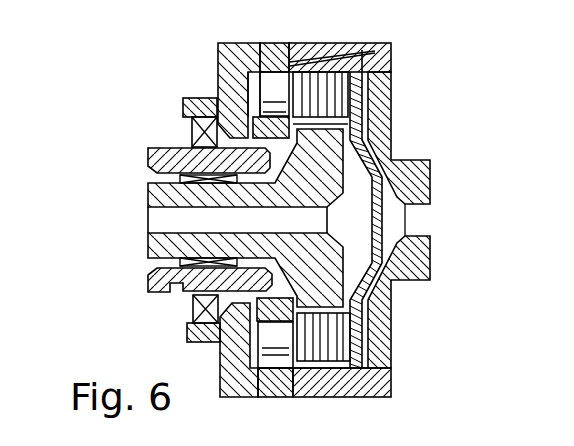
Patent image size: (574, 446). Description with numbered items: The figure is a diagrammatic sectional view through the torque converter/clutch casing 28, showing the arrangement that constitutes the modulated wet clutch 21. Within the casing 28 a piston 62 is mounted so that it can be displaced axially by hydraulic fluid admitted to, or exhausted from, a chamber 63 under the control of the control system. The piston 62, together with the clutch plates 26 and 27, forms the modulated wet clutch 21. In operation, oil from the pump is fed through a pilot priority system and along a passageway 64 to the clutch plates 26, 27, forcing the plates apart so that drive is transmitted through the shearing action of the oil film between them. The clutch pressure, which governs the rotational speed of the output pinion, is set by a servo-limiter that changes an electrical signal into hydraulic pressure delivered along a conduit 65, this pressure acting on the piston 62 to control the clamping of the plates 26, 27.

The modulated wet clutch 21 is at (369, 52).
The clutch plate 26 is at (328, 310).
The clutch plate 27 is at (302, 374).
The casing 28 is at (390, 75).
The piston 62 is at (275, 87).
The chamber 63 is at (255, 75).
The passageway 64 is at (163, 221).
The conduit 65 is at (177, 291).